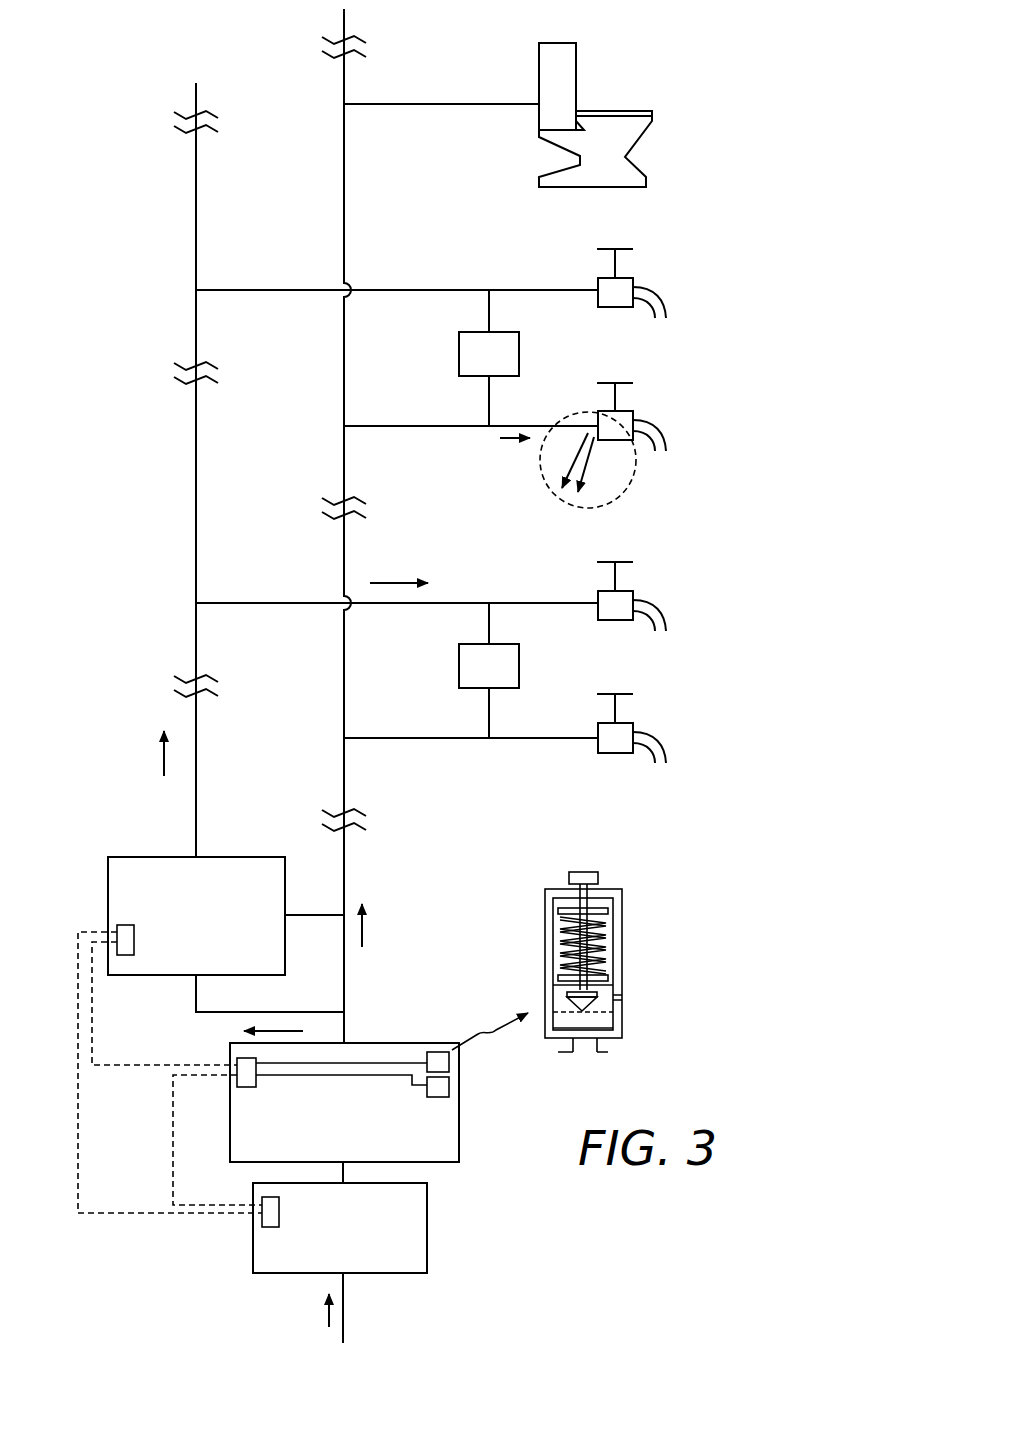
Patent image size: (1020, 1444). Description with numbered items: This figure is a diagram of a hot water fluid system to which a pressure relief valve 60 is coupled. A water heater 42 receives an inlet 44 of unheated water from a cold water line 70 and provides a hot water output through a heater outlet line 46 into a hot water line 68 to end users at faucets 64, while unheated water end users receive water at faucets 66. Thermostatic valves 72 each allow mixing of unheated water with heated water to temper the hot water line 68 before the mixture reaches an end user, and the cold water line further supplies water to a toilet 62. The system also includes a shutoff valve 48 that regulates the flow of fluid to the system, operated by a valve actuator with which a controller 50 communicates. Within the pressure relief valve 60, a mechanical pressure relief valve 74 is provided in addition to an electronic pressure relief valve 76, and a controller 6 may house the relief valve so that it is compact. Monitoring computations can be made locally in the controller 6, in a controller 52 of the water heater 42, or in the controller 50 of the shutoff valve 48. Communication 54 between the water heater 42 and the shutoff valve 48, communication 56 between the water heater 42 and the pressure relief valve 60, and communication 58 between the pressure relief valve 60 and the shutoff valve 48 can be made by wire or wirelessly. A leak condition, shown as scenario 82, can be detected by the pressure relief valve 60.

The controller 6 is at (237, 1080).
The water heater 42 is at (235, 857).
The inlet 44 is at (196, 988).
The hot water outlet line 46 is at (196, 796).
The shutoff valve 48 is at (427, 1213).
The controller 50 is at (262, 1218).
The controller 52 is at (117, 928).
The communication 54 is at (78, 1087).
The communication 56 is at (92, 1026).
The communication 58 is at (173, 1140).
The pressure relief valve 60 is at (459, 1125).
The toilet 62 is at (623, 110).
The faucets 64 is at (650, 285).
The faucets 66 is at (650, 425).
The hot water line 68 is at (254, 290).
The cold water line 70 is at (453, 104).
The thermostatic valves 72 is at (519, 350).
The mechanical pressure relief valve 74 is at (434, 1052).
The electronic pressure relief valve 76 is at (449, 1085).
The scenario 82 is at (622, 493).